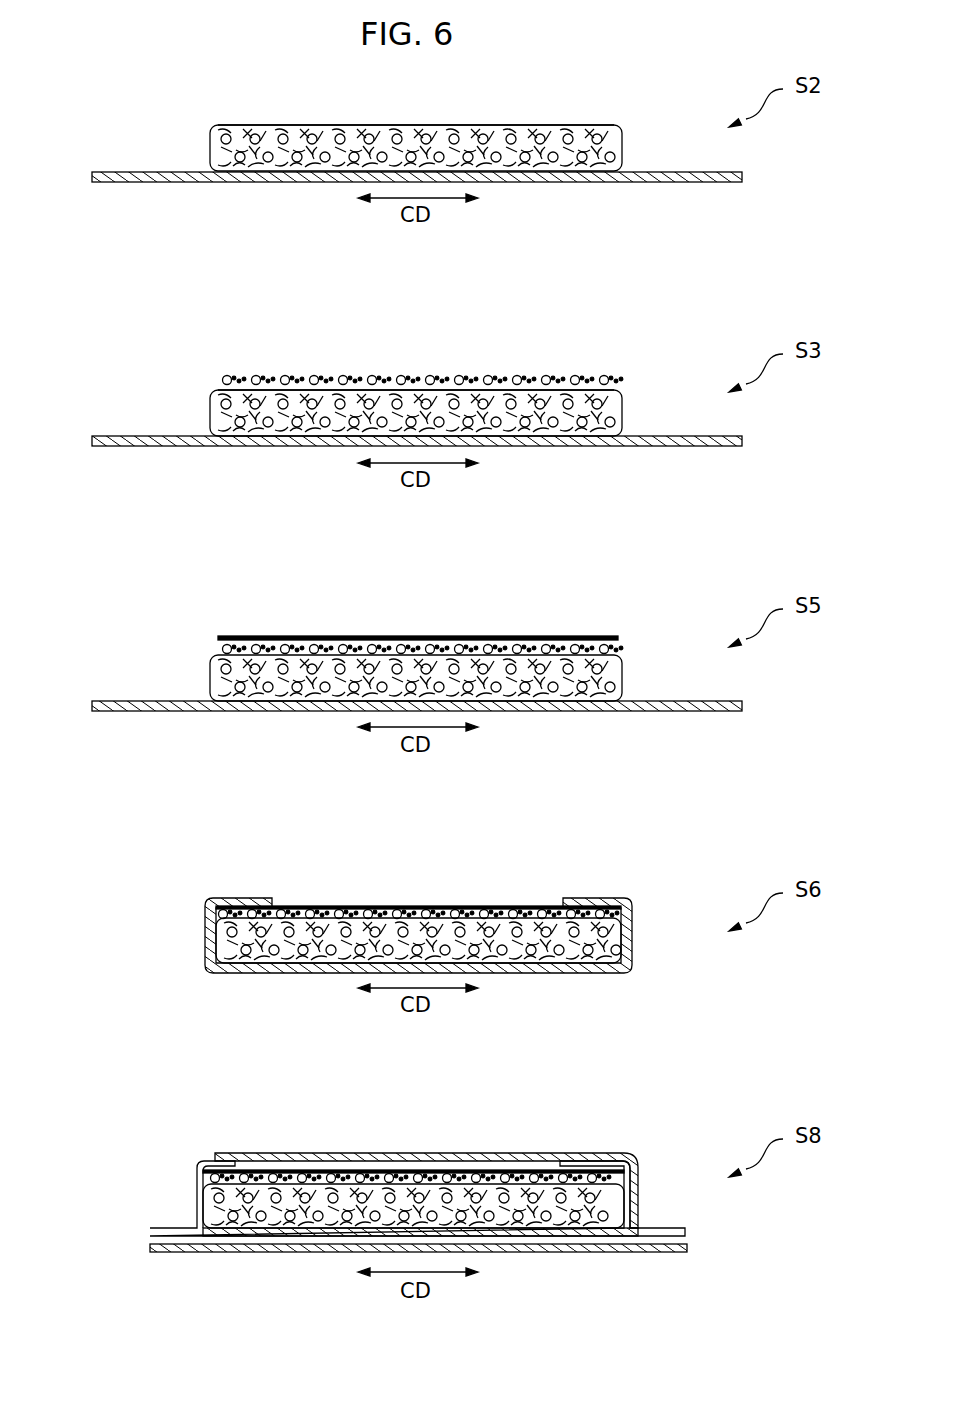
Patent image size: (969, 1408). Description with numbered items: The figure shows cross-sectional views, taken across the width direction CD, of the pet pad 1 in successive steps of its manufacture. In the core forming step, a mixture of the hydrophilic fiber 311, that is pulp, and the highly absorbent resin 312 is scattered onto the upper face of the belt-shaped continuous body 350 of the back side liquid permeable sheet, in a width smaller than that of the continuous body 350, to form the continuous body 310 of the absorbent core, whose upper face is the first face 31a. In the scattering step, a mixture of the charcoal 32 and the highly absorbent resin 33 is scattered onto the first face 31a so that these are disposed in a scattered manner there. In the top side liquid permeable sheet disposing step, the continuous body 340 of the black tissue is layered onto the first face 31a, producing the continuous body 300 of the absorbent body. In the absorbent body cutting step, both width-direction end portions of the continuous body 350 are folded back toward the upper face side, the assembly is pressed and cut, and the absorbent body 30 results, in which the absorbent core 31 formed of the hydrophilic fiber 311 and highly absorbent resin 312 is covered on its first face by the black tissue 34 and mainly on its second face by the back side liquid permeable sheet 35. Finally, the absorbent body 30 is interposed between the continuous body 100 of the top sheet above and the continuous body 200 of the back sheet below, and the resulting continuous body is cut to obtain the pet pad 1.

The pet pad 1 is at (418, 1180).
The absorbent body 30 is at (391, 1035).
The continuous body of the absorbent body 300 is at (357, 606).
The absorbent core 31 is at (130, 905).
The continuous body of the absorbent core 310 is at (190, 149).
The first face 31a is at (225, 125).
The hydrophilic fiber 311 is at (612, 166).
The highly absorbent resin 312 is at (603, 139).
The charcoal 32 is at (553, 376).
The highly absorbent resin 33 is at (599, 374).
The black tissue 34 is at (520, 906).
The continuous body of the black tissue 340 is at (572, 636).
The back side liquid permeable sheet 35 is at (560, 975).
The continuous body of the back side liquid permeable sheet 350 is at (638, 184).
The continuous body of the top sheet 100 is at (310, 1153).
The continuous body of the back sheet 200 is at (258, 1252).